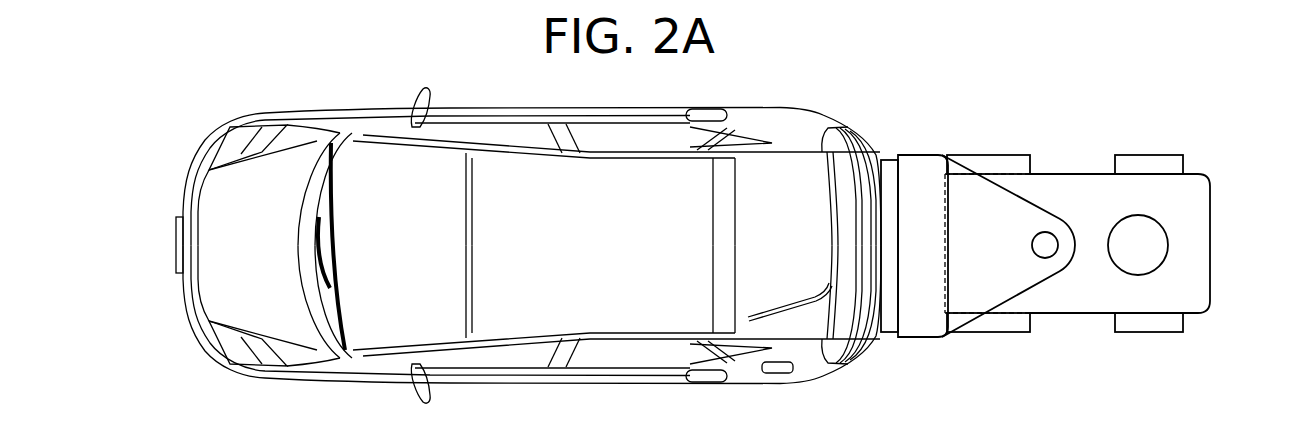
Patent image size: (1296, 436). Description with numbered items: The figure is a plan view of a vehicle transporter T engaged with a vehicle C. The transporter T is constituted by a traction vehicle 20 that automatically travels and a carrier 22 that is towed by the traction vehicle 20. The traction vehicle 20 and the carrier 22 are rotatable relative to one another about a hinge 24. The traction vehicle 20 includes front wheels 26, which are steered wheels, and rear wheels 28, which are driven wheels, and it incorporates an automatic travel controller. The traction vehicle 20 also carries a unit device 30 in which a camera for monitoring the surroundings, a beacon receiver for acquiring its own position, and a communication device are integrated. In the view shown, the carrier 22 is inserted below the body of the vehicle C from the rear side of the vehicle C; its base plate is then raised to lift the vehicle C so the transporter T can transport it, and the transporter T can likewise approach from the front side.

The vehicle C is at (360, 160).
The transporter T is at (1073, 241).
The traction vehicle 20 is at (1103, 293).
The carrier 22 is at (902, 348).
The hinge 24 is at (1049, 259).
The front wheels 26 is at (1172, 333).
The rear wheels 28 is at (998, 333).
The unit device 30 is at (1157, 240).